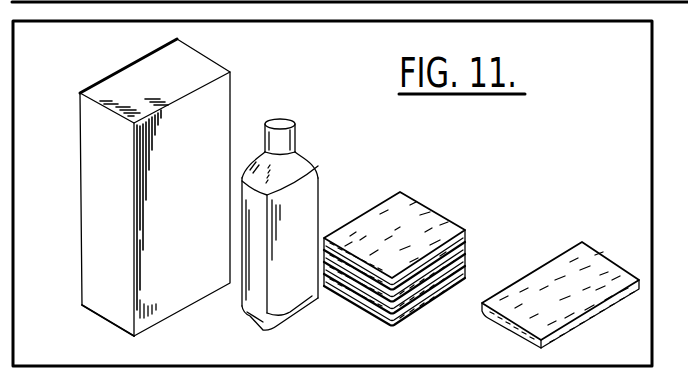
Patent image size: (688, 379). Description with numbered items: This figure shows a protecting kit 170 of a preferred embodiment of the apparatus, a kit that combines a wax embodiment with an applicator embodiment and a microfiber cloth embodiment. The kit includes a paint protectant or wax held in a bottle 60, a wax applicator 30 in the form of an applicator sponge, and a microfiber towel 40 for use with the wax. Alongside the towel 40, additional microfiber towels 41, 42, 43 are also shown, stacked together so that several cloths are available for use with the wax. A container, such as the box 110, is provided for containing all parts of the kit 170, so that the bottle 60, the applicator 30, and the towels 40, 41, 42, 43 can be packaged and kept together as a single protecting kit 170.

The protecting kit 170 is at (519, 138).
The box 110 is at (218, 98).
The bottle 60 is at (307, 162).
The microfiber towel 40 is at (415, 212).
The microfiber towel 41 is at (468, 258).
The microfiber towel 42 is at (468, 270).
The microfiber towel 43 is at (372, 310).
The wax applicator 30 is at (567, 263).